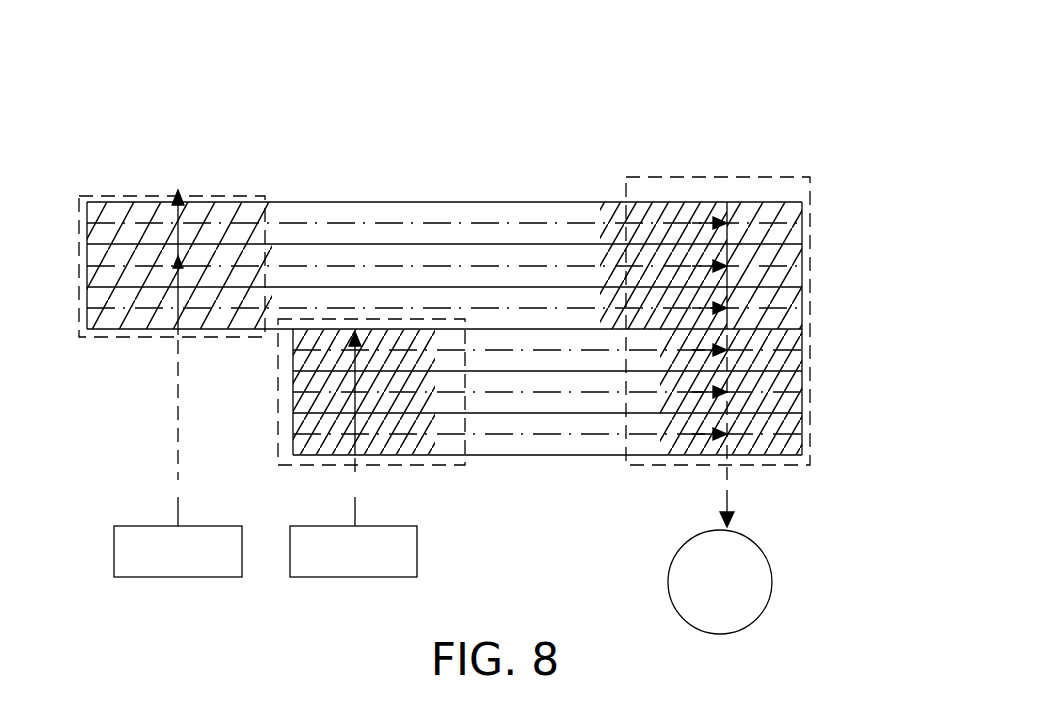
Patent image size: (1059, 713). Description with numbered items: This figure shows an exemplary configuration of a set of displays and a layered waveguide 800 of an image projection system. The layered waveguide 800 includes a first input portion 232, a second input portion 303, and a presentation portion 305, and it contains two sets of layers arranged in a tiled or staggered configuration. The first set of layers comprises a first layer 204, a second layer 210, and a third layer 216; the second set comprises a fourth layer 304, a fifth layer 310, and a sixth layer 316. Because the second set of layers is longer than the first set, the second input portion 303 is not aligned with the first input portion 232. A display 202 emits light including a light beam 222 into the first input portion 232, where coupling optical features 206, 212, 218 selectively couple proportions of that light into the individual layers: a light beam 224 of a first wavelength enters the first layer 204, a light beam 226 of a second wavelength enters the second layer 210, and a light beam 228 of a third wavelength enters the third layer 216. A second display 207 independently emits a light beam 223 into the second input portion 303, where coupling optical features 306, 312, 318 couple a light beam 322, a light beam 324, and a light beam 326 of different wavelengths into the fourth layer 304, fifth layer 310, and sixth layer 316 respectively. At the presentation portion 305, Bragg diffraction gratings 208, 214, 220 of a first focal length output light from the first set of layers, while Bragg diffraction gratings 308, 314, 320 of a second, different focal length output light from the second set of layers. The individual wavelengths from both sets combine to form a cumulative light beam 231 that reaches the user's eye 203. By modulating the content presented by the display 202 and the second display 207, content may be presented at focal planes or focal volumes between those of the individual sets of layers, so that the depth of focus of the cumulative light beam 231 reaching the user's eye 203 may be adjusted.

The layered waveguide 800 is at (661, 55).
The display 202 is at (363, 578).
The user's eye 203 is at (772, 595).
The first layer 204 is at (805, 434).
The coupling optical features 206 is at (333, 457).
The second display 207 is at (210, 578).
The Bragg diffraction gratings 208 is at (737, 458).
The second layer 210 is at (805, 393).
The coupling optical features 212 is at (292, 381).
The Bragg diffraction gratings 214 is at (740, 363).
The third layer 216 is at (805, 346).
The coupling optical features 218 is at (292, 331).
The Bragg diffraction gratings 220 is at (753, 362).
The light beam 222 is at (357, 505).
The light beam 223 is at (178, 497).
The light beam 224 is at (475, 437).
The light beam 226 is at (502, 392).
The light beam 228 is at (583, 350).
The cumulative light beam 231 is at (725, 497).
The first input portion 232 is at (279, 447).
The second input portion 303 is at (79, 323).
The fourth layer 304 is at (805, 299).
The presentation portion 305 is at (810, 177).
The coupling optical features 306 is at (200, 300).
The Bragg diffraction gratings 308 is at (778, 240).
The fifth layer 310 is at (805, 257).
The coupling optical features 312 is at (158, 268).
The Bragg diffraction gratings 314 is at (783, 293).
The sixth layer 316 is at (805, 213).
The coupling optical features 318 is at (142, 238).
The Bragg diffraction gratings 320 is at (755, 268).
The light beam 322 is at (368, 302).
The light beam 324 is at (430, 262).
The light beam 326 is at (520, 222).